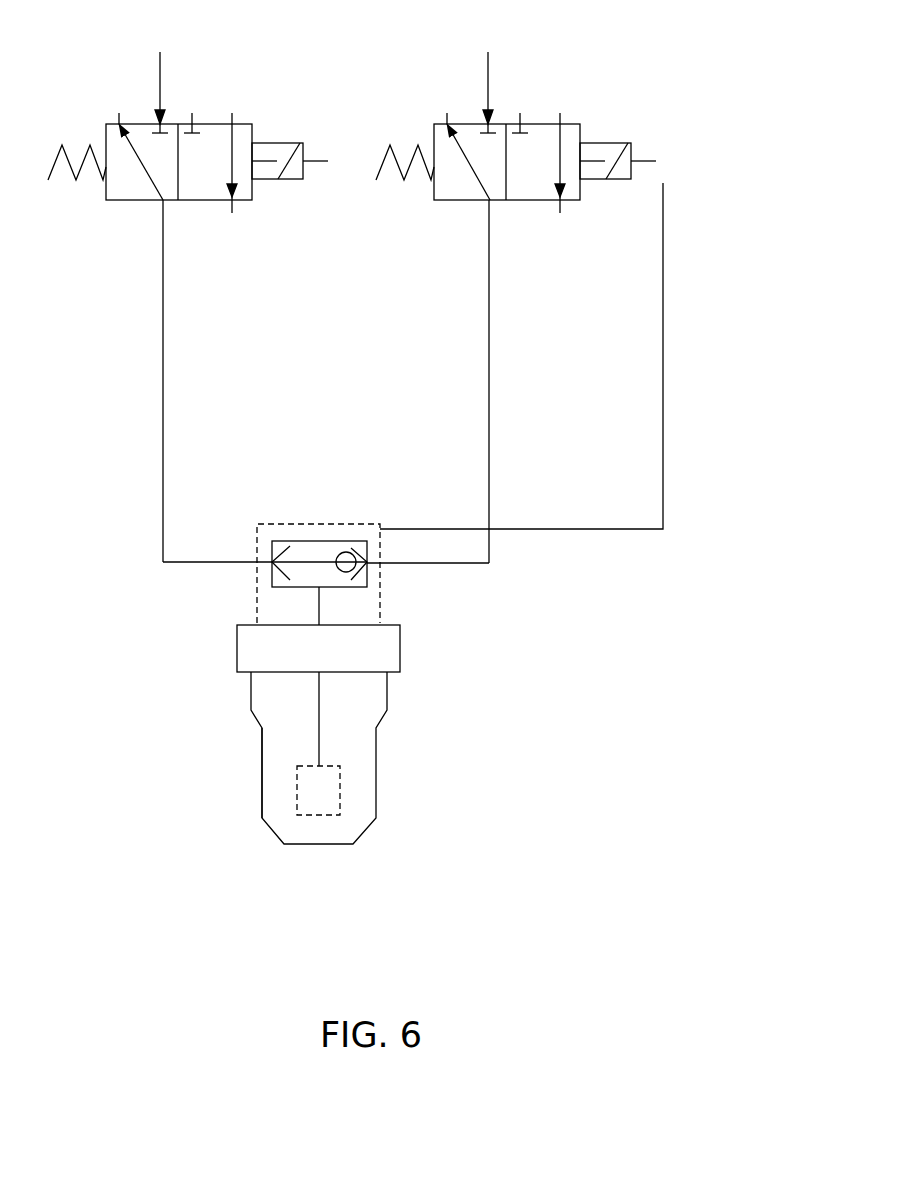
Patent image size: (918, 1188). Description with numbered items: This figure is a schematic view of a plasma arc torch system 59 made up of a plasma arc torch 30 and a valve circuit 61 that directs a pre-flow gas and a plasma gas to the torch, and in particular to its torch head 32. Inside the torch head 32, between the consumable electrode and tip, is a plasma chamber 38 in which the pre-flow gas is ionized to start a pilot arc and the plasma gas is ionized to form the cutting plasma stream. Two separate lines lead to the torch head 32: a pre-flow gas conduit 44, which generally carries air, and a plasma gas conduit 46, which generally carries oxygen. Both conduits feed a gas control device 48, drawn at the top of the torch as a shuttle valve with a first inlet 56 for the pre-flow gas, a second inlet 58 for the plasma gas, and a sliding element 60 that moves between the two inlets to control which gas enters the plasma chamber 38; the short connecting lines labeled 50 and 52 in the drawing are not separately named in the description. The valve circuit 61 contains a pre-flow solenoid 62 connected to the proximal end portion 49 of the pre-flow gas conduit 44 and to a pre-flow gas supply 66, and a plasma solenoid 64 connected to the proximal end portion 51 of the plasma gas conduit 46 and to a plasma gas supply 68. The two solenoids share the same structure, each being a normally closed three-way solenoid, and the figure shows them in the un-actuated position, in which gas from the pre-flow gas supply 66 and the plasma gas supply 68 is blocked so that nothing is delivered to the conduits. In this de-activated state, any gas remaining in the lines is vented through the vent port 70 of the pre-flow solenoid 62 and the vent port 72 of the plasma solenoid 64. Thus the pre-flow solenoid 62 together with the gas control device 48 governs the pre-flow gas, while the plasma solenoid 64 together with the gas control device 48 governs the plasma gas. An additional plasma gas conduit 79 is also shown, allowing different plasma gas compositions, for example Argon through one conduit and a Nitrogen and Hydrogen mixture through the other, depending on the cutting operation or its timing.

The plasma arc torch 30 is at (402, 725).
The torch head 32 is at (260, 760).
The plasma chamber 38 is at (340, 800).
The pre-flow gas conduit 44 is at (163, 497).
The plasma gas conduit 46 is at (489, 408).
The gas control device 48 is at (272, 594).
The proximal end portion of the pre-flow gas conduit 49 is at (163, 258).
The pre-flow gas inlet line 50 is at (163, 562).
The proximal end portion of the plasma gas conduit 51 is at (490, 258).
The plasma gas inlet line 52 is at (490, 543).
The first inlet 56 is at (272, 562).
The second inlet 58 is at (367, 563).
The plasma arc torch system 59 is at (717, 103).
The sliding element 60 is at (345, 550).
The valve circuit 61 is at (598, 373).
The pre-flow solenoid 62 is at (106, 200).
The plasma solenoid 64 is at (612, 183).
The pre-flow gas supply 66 is at (160, 73).
The plasma gas supply 68 is at (494, 73).
The vent port 70 is at (94, 102).
The vent port 72 is at (419, 102).
The additional plasma gas conduit 79 is at (663, 508).